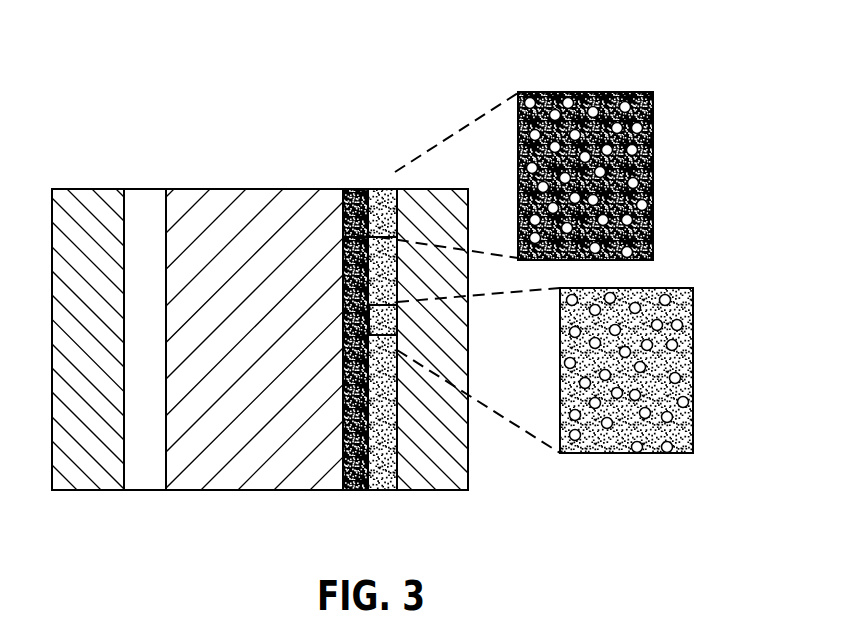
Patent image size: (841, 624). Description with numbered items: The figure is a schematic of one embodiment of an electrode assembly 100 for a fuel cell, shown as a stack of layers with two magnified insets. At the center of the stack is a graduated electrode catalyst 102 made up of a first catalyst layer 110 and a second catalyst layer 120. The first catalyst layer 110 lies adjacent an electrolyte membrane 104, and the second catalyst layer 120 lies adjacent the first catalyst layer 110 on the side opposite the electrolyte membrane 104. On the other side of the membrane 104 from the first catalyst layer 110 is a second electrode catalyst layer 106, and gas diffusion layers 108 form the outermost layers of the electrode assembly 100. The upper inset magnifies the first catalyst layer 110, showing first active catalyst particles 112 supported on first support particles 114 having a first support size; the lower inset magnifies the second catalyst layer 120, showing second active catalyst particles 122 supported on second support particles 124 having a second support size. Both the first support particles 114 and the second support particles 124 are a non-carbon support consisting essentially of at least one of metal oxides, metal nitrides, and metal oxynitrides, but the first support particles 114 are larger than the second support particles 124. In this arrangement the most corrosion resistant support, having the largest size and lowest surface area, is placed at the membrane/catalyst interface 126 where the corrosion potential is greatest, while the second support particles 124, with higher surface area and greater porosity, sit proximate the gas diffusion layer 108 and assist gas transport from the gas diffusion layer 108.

The electrode assembly 100 is at (121, 138).
The graduated electrode catalyst 102 is at (354, 349).
The electrolyte membrane 104 is at (264, 469).
The second electrode catalyst layer 106 is at (147, 469).
The gas diffusion layers 108 is at (88, 469).
The first catalyst layer 110 is at (356, 488).
The first active catalyst particles 112 is at (569, 99).
The first support particles 114 is at (636, 134).
The second catalyst layer 120 is at (383, 485).
The second active catalyst particles 122 is at (607, 429).
The second support particles 124 is at (669, 421).
The membrane/catalyst interface 126 is at (342, 262).